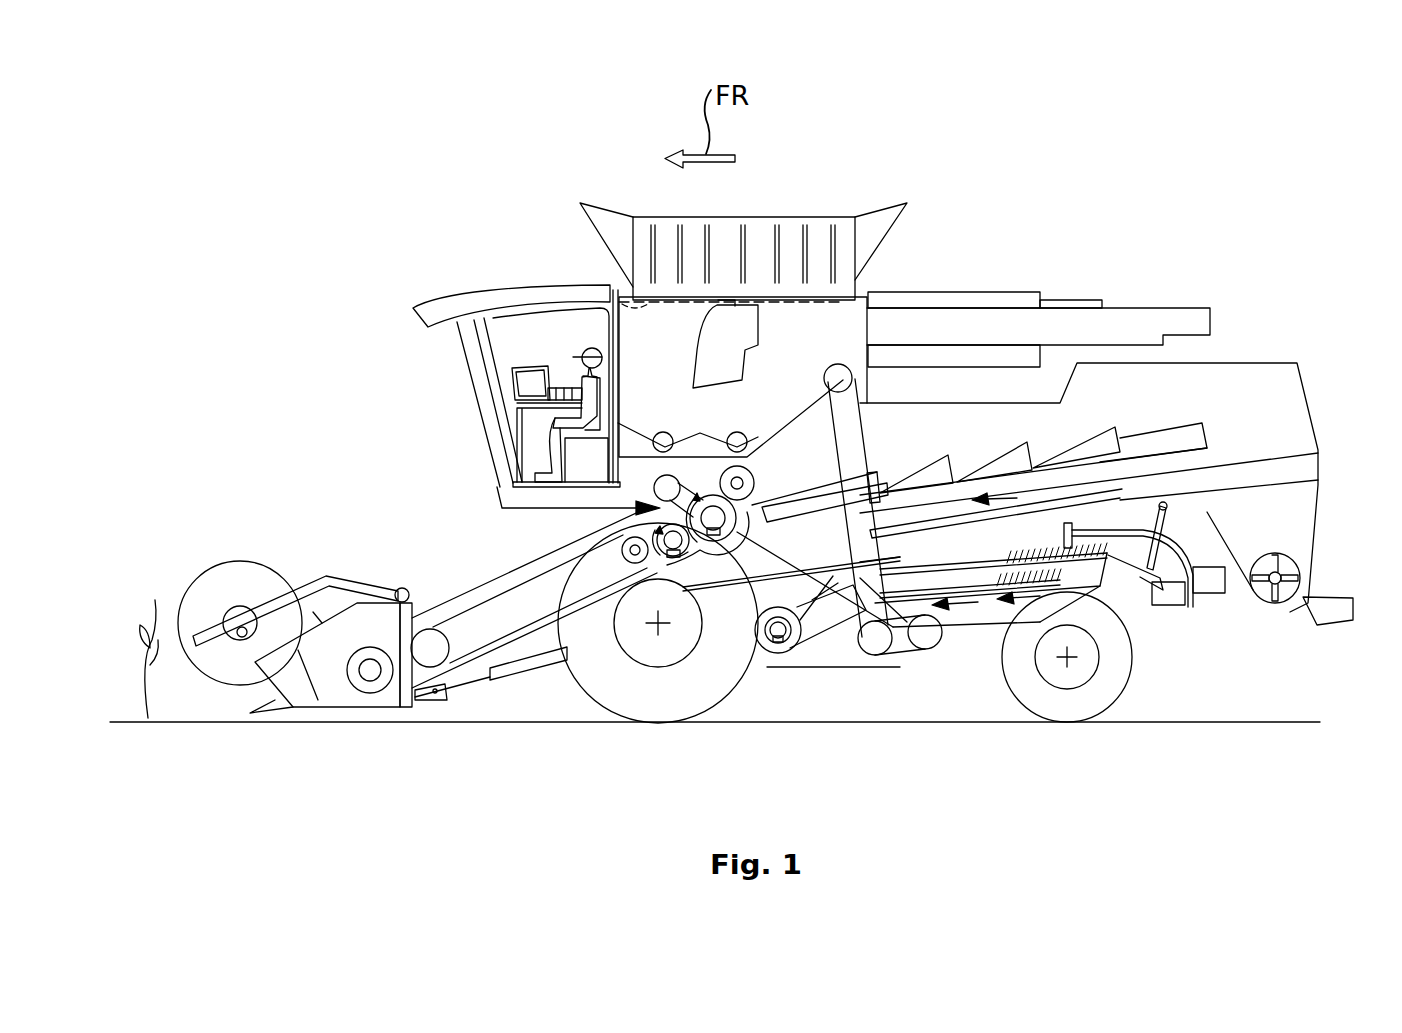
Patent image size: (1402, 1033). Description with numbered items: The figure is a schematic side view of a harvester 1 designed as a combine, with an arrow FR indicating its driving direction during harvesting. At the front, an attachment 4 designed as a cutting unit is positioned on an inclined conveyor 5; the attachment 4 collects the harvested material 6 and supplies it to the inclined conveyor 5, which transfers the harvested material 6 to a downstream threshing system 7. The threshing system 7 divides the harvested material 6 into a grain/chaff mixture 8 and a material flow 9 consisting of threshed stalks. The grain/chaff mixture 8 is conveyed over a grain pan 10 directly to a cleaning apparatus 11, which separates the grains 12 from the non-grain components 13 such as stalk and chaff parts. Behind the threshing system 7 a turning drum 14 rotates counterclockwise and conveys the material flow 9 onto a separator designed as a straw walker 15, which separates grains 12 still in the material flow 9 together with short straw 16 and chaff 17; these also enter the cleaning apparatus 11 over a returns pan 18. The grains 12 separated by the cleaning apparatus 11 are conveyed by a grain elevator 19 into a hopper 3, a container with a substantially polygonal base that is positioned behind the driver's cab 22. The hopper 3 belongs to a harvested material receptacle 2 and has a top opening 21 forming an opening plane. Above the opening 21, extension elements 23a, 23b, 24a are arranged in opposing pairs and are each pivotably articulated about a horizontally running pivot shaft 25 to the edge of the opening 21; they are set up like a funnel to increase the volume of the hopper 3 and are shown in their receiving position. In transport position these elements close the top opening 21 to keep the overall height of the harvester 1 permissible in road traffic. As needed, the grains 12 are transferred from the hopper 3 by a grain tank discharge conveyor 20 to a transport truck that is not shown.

The harvester 1 is at (322, 382).
The harvested material receptacle 2 is at (945, 182).
The hopper 3 is at (665, 403).
The attachment 4 is at (295, 552).
The inclined conveyor 5 is at (455, 605).
The harvested material 6 is at (152, 640).
The threshing system 7 is at (623, 513).
The grain/chaff mixture 8 is at (716, 566).
The material flow 9 is at (1180, 408).
The grain pan 10 is at (732, 583).
The cleaning apparatus 11 is at (922, 672).
The grains 12 is at (998, 473).
The non-grain components 13 is at (1042, 597).
The turning drum 14 is at (748, 455).
The straw walker 15 is at (1092, 443).
The short straw 16 is at (1076, 447).
The chaff 17 is at (1153, 442).
The returns pan 18 is at (1042, 506).
The grain elevator 19 is at (851, 667).
The grain tank discharge conveyor 20 is at (1167, 325).
The opening 21 is at (838, 300).
The driver's cab 22 is at (430, 302).
The extension element 23a is at (591, 183).
The extension element 23b is at (898, 188).
The extension element 24a is at (790, 198).
The pivot shaft 25 is at (607, 283).